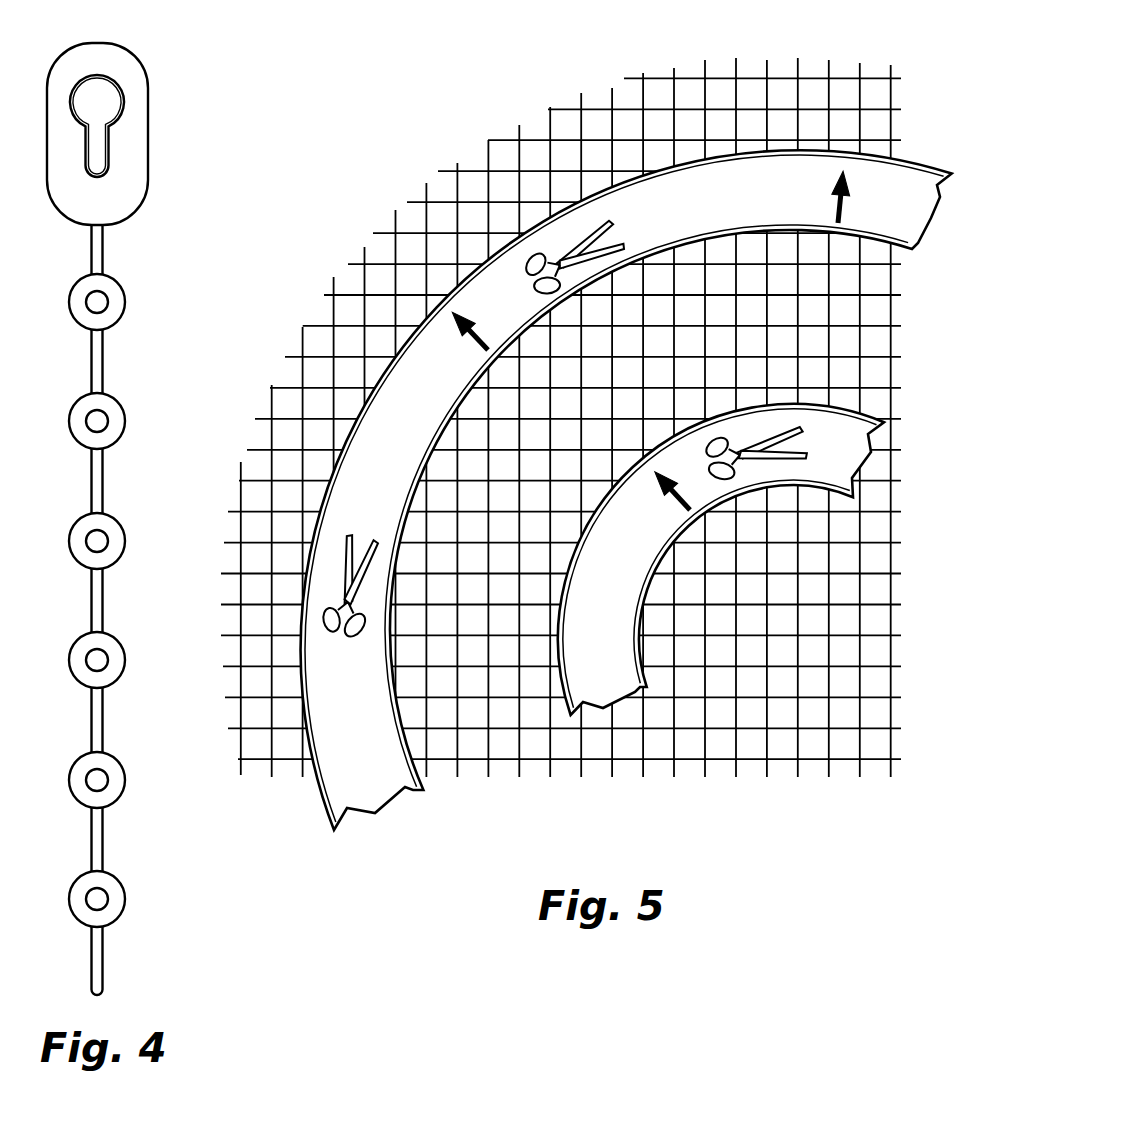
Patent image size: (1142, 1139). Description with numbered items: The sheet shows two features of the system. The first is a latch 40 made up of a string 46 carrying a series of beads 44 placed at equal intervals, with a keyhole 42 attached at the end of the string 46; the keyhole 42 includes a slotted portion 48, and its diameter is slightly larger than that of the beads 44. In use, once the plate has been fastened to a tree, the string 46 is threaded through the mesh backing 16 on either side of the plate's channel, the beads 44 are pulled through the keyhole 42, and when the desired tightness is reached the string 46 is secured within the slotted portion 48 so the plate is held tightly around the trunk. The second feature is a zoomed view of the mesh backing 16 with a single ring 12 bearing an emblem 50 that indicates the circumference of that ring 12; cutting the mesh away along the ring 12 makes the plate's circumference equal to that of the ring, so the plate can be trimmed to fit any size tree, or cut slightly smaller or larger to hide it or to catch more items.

In FIG. 5, the ring 12 is at (470, 303).
In FIG. 5, the mesh backing 16 is at (576, 156).
In FIG. 4, the latch 40 is at (169, 513).
In FIG. 4, the keyhole 42 is at (124, 101).
In FIG. 4, the beads 44 is at (119, 673).
In FIG. 4, the string 46 is at (104, 367).
In FIG. 4, the slotted portion 48 is at (108, 165).
In FIG. 5, the emblem 50 is at (722, 225).